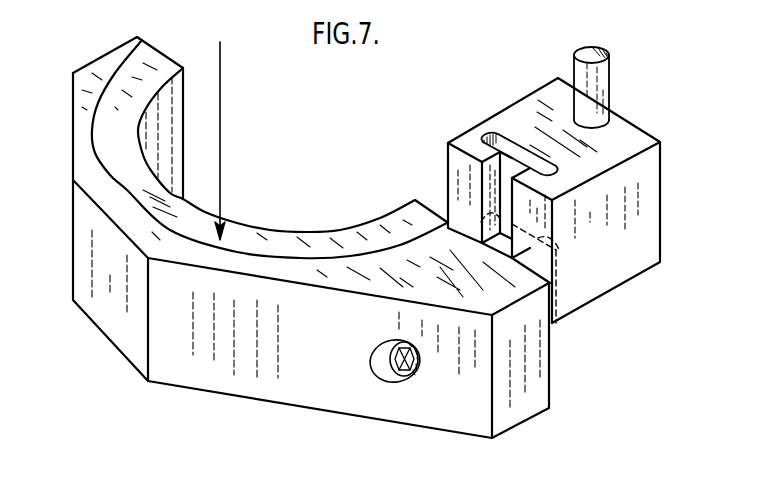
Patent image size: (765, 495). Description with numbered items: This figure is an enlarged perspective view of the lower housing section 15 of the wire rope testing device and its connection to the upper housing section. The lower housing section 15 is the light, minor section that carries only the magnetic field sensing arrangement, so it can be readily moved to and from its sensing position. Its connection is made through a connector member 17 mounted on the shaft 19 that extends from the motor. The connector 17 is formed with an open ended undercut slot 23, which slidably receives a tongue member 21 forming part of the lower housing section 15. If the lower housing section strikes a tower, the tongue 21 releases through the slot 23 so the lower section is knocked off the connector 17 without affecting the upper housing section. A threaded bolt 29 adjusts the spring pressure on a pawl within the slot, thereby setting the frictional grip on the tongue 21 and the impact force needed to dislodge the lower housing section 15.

The lower housing section 15 is at (294, 387).
The connector member 17 is at (623, 260).
The shaft 19 is at (578, 68).
The tongue member 21 is at (555, 243).
The undercut slot 23 is at (502, 143).
The threaded bolt 29 is at (417, 372).